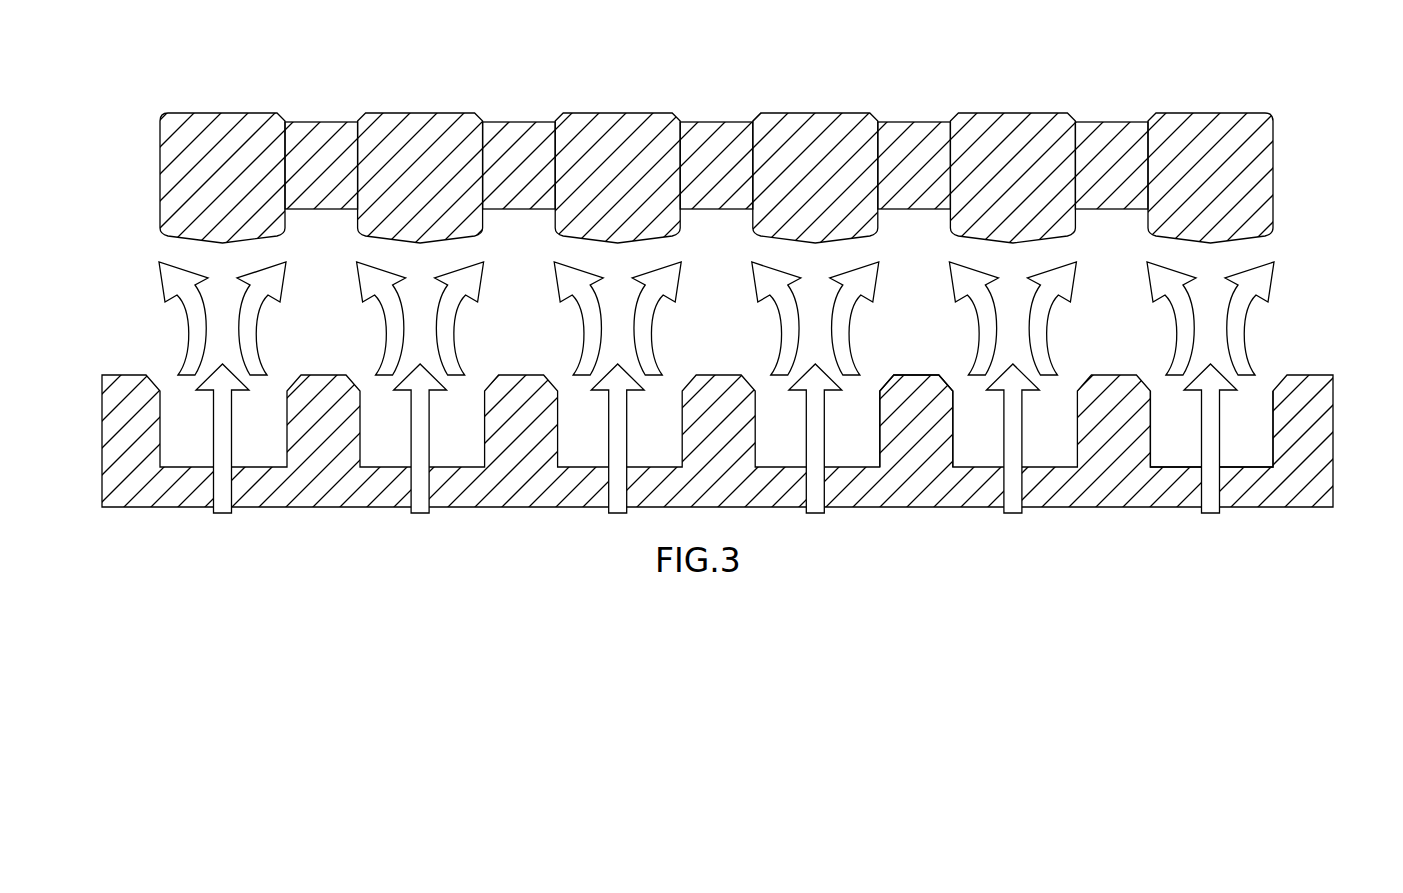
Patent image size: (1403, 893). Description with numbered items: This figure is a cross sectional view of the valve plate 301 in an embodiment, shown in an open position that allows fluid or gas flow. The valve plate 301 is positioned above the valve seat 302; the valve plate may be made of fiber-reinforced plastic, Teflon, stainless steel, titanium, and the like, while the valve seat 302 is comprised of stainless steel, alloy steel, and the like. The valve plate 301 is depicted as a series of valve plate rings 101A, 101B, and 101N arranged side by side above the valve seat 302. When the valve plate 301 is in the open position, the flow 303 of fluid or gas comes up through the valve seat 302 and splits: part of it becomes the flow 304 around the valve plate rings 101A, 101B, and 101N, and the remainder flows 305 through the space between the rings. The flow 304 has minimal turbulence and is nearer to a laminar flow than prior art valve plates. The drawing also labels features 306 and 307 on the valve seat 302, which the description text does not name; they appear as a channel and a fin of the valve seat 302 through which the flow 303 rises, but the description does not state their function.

The valve plate ring 101A is at (222, 137).
The valve plate ring 101B is at (420, 152).
The valve plate ring 101N is at (1216, 148).
The valve plate 301 is at (701, 300).
The valve seat 302 is at (701, 300).
The flow 303 is at (716, 474).
The flow around the valve plate rings 304 is at (760, 318).
The flow through the space between the rings 305 is at (716, 145).
The channel / groove 306 is at (1211, 429).
The fin / wall 307 is at (916, 410).